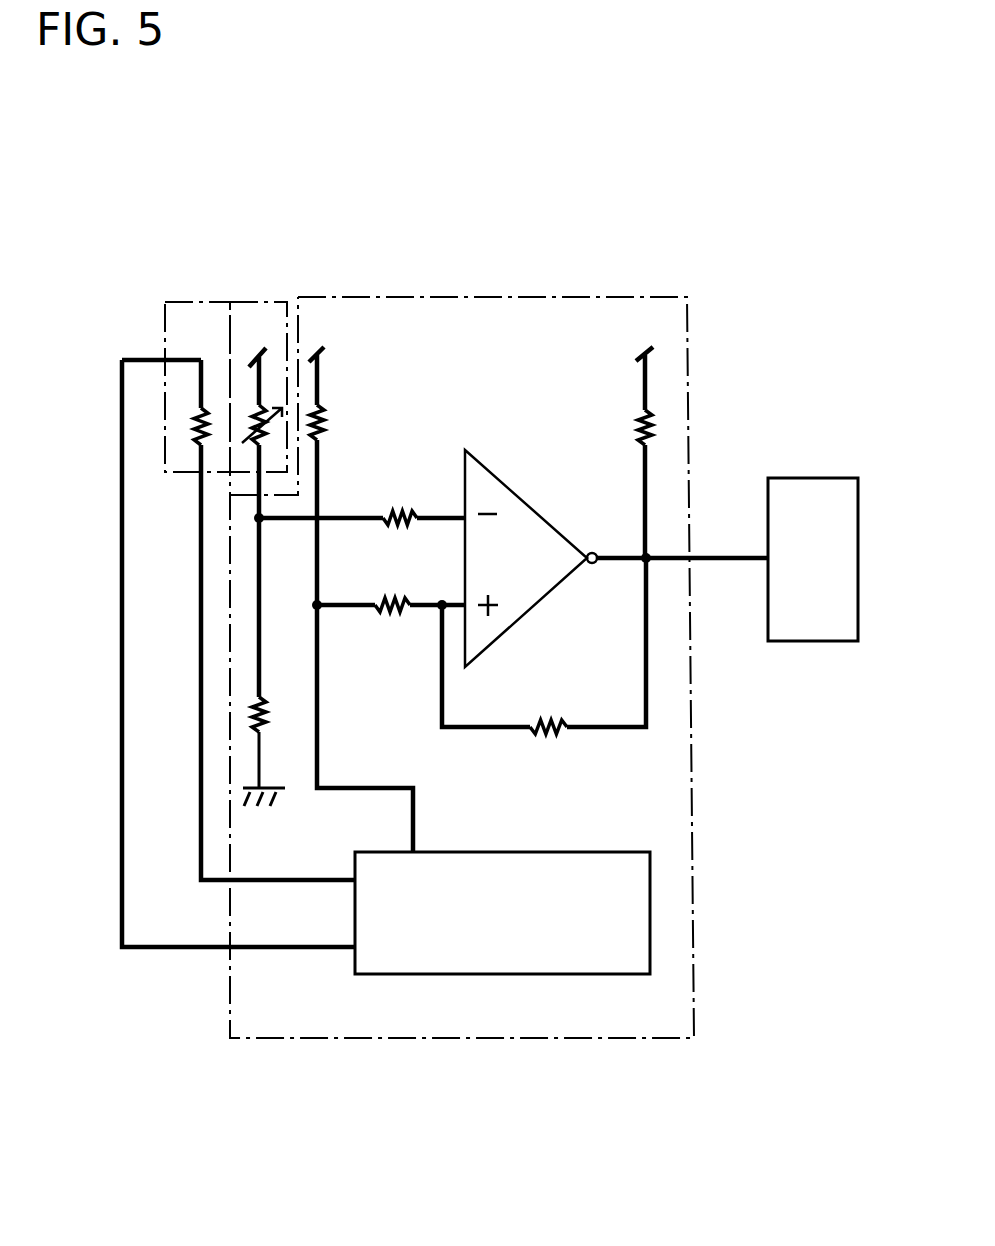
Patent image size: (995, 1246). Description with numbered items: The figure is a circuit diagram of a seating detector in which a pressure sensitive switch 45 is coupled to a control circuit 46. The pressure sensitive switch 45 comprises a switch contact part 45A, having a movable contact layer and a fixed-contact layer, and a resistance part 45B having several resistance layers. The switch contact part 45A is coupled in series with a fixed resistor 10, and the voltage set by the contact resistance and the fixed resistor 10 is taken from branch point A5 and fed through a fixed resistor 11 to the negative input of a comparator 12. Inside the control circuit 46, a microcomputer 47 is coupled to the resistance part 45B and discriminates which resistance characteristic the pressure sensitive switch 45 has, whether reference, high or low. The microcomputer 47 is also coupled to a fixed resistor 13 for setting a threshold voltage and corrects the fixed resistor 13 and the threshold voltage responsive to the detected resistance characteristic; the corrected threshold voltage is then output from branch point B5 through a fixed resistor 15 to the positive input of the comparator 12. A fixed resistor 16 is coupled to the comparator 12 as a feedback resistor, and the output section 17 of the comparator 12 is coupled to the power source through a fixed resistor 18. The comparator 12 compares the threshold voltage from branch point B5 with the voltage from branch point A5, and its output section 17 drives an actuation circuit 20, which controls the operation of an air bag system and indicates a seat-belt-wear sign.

The fixed resistor 10 is at (257, 727).
The fixed resistor 11 is at (395, 505).
The comparator 12 is at (532, 505).
The fixed resistor 13 is at (320, 408).
The fixed resistor 15 is at (383, 615).
The fixed resistor 16 is at (540, 735).
The output section 17 is at (583, 565).
The fixed resistor 18 is at (655, 424).
The actuation circuit 20 is at (801, 641).
The pressure sensitive switch 45 is at (251, 311).
The switch contact part 45A is at (260, 303).
The resistance part 45B is at (190, 303).
The control circuit 46 is at (505, 297).
The microcomputer 47 is at (652, 912).
The branch point A5 is at (255, 522).
The branch point B5 is at (313, 610).